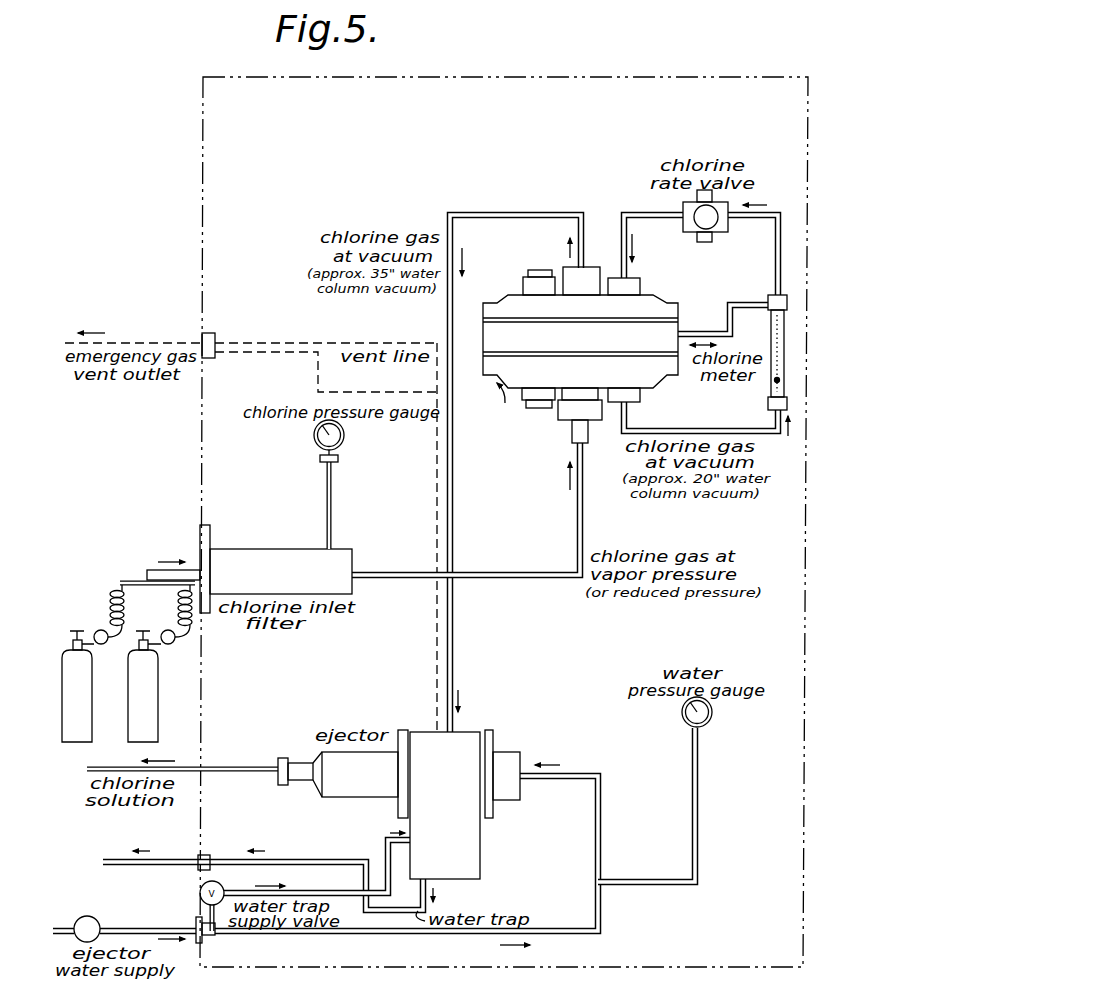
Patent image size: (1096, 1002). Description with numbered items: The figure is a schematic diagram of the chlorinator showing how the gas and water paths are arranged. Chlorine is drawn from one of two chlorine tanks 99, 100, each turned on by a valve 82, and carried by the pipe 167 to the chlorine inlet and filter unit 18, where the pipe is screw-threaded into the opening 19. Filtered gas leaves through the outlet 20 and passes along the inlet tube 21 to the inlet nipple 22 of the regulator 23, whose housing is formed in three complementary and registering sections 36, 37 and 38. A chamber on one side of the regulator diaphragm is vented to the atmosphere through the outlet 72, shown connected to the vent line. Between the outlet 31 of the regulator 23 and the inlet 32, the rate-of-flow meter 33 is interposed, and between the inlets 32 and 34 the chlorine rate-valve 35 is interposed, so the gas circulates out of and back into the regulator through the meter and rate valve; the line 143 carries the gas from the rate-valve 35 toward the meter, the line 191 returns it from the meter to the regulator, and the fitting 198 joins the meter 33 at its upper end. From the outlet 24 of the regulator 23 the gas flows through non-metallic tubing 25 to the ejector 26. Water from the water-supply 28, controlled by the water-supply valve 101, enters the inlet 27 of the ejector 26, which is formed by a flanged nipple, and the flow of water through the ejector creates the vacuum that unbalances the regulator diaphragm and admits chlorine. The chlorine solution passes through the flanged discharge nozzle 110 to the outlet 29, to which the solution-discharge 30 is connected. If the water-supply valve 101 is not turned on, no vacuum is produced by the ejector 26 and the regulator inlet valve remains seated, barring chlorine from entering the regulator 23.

The chlorine inlet and filter unit 18 is at (281, 571).
The chlorine supply connection 19 is at (197, 560).
The outlet 20 is at (358, 576).
The inlet tube 21 is at (575, 522).
The inlet nipple 22 is at (572, 438).
The regulator 23 is at (502, 287).
The outlet 24 is at (588, 267).
The non-metallic tubing 25 is at (518, 214).
The ejector 26 is at (420, 730).
The inlet 27 is at (526, 786).
The water-supply 28 is at (601, 811).
The outlet 29 is at (276, 762).
The solution-discharge 30 is at (236, 767).
The outlet 31 is at (630, 404).
The inlet 32 is at (684, 333).
The rate-of-flow meter 33 is at (789, 313).
The inlet 34 is at (638, 278).
The chlorine rate-valve 35 is at (683, 208).
The housing section 36 is at (580, 367).
The housing section 37 is at (580, 337).
The housing section 38 is at (580, 307).
The outlet 72 is at (492, 402).
The valve 82 is at (101, 645).
The chlorine tank 99 is at (63, 697).
The chlorine tank 100 is at (129, 697).
The water-supply valve 101 is at (90, 921).
The discharge nozzle 110 is at (343, 774).
The rate valve outlet line 143 is at (776, 272).
The pipe 167 is at (158, 568).
The meter outlet line 191 is at (700, 430).
The meter inlet fitting 198 is at (768, 300).